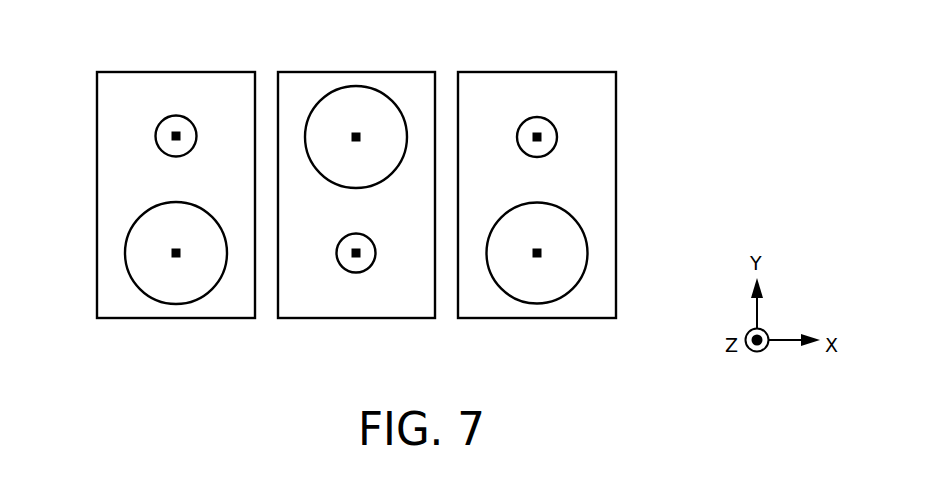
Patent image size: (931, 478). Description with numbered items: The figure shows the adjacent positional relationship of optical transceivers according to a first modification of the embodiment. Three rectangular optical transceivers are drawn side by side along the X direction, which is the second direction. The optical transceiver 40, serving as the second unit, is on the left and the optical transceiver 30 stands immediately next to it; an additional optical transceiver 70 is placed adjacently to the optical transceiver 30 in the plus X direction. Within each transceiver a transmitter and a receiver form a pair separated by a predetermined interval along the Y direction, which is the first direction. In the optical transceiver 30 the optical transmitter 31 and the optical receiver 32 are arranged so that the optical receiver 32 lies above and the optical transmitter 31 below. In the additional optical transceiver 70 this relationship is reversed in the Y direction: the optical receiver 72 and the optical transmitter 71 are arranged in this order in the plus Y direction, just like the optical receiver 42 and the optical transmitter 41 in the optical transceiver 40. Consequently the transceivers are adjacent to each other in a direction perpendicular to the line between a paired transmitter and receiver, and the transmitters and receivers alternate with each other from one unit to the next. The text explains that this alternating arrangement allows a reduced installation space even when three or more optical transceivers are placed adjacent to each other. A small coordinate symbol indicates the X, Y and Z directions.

The optical transceiver 30 is at (393, 71).
The optical transmitter 31 is at (356, 258).
The optical receiver 32 is at (356, 132).
The optical transceiver 40 is at (212, 71).
The optical transmitter 41 is at (172, 136).
The optical receiver 42 is at (172, 253).
The optical transceiver 70 is at (573, 71).
The optical transmitter 71 is at (542, 136).
The optical receiver 72 is at (542, 253).